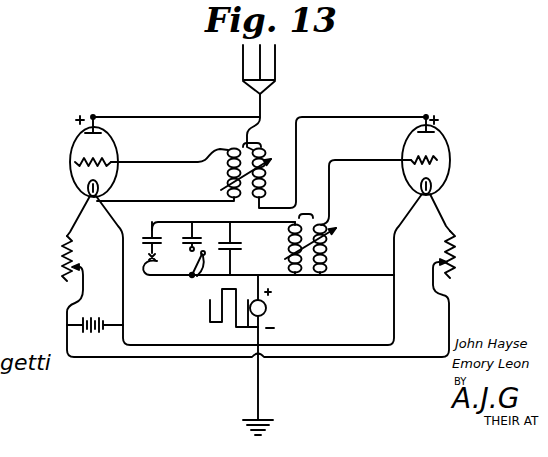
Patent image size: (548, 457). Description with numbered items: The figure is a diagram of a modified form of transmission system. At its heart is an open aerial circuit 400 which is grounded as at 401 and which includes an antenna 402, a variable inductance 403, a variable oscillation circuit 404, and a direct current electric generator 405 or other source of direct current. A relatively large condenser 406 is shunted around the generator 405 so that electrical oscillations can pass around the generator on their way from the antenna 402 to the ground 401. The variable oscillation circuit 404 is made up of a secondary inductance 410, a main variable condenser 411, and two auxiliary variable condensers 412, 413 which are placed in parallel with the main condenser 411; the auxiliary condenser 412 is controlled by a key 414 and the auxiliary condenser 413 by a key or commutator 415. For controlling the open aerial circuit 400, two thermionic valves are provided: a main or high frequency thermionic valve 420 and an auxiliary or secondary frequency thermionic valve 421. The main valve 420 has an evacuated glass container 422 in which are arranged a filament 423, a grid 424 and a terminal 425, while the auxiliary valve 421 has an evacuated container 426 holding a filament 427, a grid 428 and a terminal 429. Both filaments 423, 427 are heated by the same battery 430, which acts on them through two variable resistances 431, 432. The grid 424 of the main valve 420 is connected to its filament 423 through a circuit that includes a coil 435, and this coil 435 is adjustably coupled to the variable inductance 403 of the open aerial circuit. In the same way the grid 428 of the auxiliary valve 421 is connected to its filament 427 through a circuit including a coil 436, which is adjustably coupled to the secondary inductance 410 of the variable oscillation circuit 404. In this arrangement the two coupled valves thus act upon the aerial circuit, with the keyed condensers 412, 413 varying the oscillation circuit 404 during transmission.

The open aerial circuit 400 is at (276, 73).
The ground 401 is at (272, 431).
The antenna 402 is at (258, 95).
The variable inductance 403 is at (261, 173).
The variable oscillation circuit 404 is at (241, 250).
The direct current electric generator 405 is at (267, 310).
The condenser 406 is at (210, 313).
The secondary inductance 410 is at (290, 270).
The main variable condenser 411 is at (233, 236).
The auxiliary variable condenser 412 is at (192, 236).
The auxiliary variable condenser 413 is at (153, 236).
The key 414 is at (193, 274).
The key or commutator 415 is at (144, 277).
The main or high frequency thermionic valve 420 is at (69, 156).
The auxiliary or secondary frequency thermionic valve 421 is at (442, 141).
The evacuated glass container 422 is at (72, 176).
The filament 423 is at (88, 190).
The grid 424 is at (107, 156).
The terminal 425 is at (101, 135).
The evacuated container 426 is at (450, 172).
The filament 427 is at (434, 190).
The grid 428 is at (437, 160).
The terminal 429 is at (432, 133).
The battery 430 is at (95, 317).
The variable resistance 431 is at (60, 266).
The variable resistance 432 is at (452, 263).
The coil 435 is at (216, 148).
The coil 436 is at (325, 250).